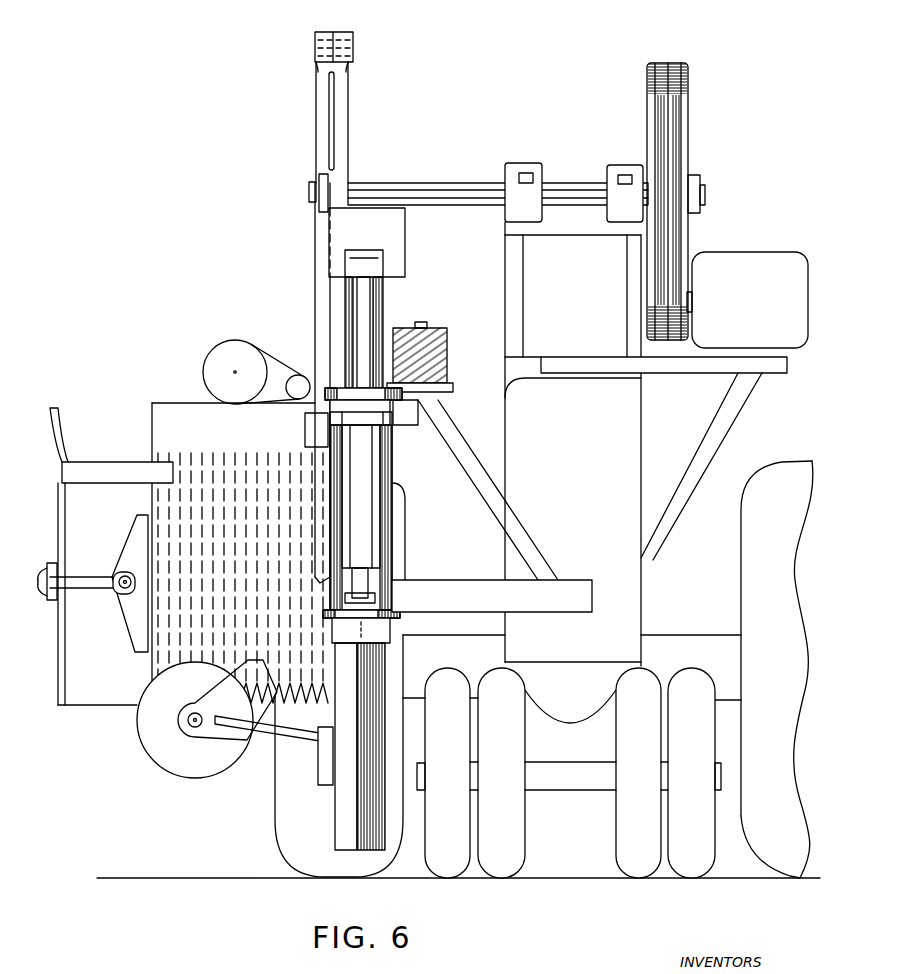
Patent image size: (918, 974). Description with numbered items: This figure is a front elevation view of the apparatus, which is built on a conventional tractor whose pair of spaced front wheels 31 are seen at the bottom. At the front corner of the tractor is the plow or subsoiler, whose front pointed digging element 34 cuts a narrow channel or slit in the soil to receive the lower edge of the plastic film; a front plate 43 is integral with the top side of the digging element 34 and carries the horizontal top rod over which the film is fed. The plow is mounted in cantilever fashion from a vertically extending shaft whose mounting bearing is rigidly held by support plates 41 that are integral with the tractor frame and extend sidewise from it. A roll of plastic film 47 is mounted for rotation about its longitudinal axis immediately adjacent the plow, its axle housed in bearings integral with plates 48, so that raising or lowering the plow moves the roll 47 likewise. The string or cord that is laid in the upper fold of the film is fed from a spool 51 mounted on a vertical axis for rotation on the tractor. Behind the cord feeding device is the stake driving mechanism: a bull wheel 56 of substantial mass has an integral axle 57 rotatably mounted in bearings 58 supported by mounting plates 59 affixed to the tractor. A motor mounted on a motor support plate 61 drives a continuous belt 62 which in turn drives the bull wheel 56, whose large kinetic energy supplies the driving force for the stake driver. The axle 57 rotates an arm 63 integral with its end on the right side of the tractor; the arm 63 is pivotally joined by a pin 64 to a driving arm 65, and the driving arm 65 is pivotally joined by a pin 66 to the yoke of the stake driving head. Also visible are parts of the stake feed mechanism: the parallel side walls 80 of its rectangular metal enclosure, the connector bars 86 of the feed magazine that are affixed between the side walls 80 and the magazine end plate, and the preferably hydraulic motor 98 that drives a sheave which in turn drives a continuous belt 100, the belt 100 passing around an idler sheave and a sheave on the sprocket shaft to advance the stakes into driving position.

The front wheels 31 is at (510, 840).
The digging element 34 is at (340, 822).
The support plates 41 is at (437, 586).
The front plate 43 is at (340, 632).
The roll of plastic film 47 is at (152, 756).
The plates 48 is at (227, 690).
The spool 51 is at (448, 350).
The bull wheel 56 is at (690, 80).
The axle 57 is at (452, 192).
The bearings 58 is at (522, 163).
The mounting plates 59 is at (507, 253).
The motor support plate 61 is at (772, 375).
The continuous belt 62 is at (677, 122).
The arm 63 is at (345, 105).
The pin 64 is at (356, 50).
The driving arm 65 is at (318, 115).
The pin 66 is at (758, 256).
The side walls 80 is at (147, 460).
The connector bars 86 is at (77, 465).
The motor 98 is at (231, 343).
The continuous belt 100 is at (281, 372).